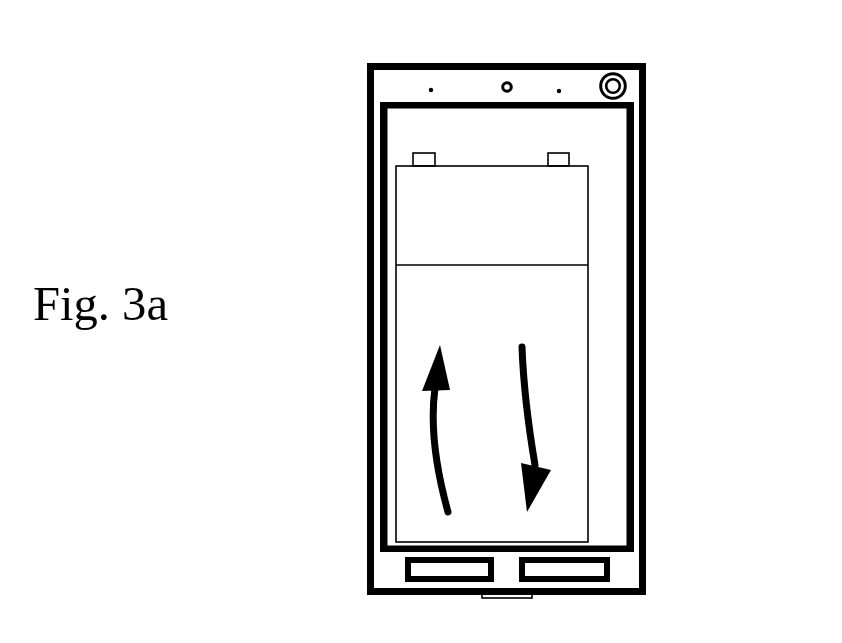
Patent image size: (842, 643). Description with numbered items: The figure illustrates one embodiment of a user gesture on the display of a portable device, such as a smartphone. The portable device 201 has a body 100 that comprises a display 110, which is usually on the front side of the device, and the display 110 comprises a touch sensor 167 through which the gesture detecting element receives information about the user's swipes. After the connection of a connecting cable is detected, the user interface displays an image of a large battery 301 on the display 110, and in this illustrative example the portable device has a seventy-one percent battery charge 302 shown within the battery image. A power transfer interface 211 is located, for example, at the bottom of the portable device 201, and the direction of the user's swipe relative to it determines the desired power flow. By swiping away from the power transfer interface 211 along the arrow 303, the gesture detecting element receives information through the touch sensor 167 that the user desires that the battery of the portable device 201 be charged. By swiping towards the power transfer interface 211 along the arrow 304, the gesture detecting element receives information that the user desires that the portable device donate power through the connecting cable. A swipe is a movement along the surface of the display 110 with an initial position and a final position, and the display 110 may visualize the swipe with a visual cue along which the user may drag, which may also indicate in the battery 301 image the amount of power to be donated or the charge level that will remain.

The body 100 is at (368, 190).
The portable device 201 is at (388, 88).
The display 110 is at (616, 180).
The touch sensor 167 is at (623, 218).
The battery 301 is at (570, 248).
The battery charge 302 is at (572, 372).
The arrow 303 is at (433, 405).
The arrow 304 is at (537, 435).
The power transfer interface 211 is at (508, 598).